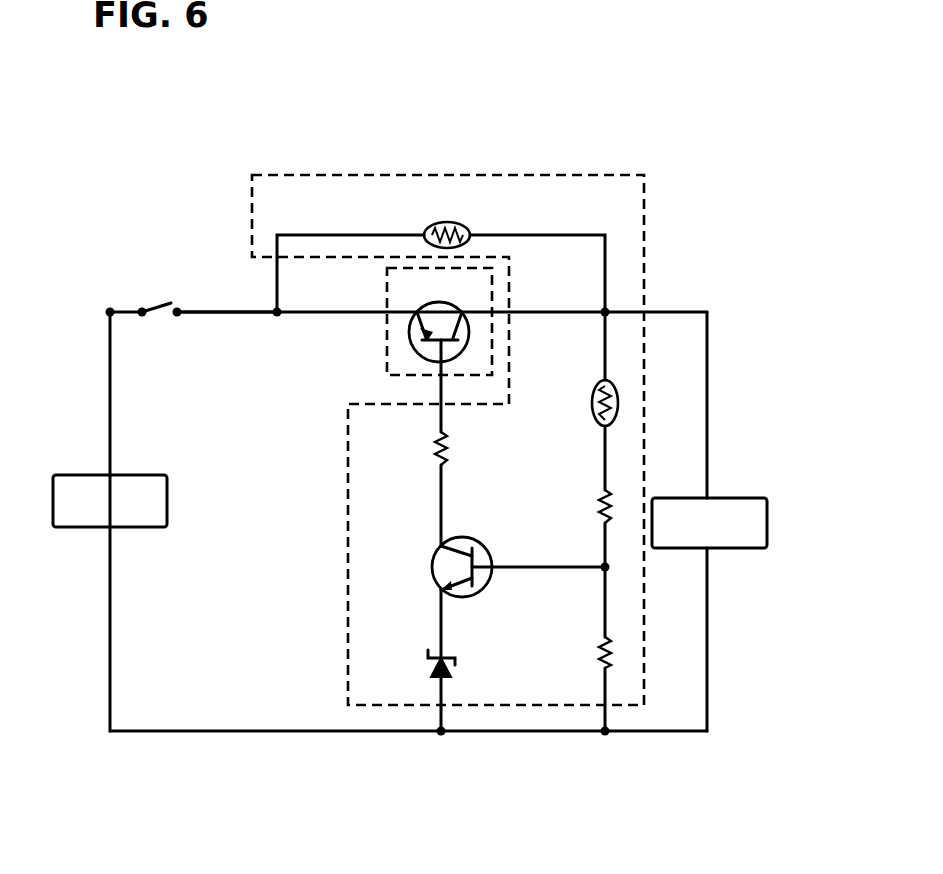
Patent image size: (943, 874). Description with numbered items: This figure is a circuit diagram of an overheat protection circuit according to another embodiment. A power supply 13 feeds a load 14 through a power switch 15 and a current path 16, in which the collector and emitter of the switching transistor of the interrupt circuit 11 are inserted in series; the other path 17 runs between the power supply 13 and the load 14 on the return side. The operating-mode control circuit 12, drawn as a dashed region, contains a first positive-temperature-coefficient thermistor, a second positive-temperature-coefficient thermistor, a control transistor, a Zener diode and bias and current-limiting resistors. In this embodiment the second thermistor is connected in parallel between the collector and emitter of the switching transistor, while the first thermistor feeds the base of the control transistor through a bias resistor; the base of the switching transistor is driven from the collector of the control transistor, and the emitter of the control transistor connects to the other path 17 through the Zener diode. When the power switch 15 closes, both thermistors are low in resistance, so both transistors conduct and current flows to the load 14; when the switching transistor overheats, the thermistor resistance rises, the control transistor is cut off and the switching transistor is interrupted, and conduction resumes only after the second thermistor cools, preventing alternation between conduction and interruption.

The interrupt circuit 11 is at (380, 347).
The operating-mode control circuit 12 is at (441, 398).
The power supply 13 is at (80, 528).
The load 14 is at (742, 550).
The power switch 15 is at (152, 308).
The current path 16 is at (223, 312).
The other path 17 is at (275, 732).